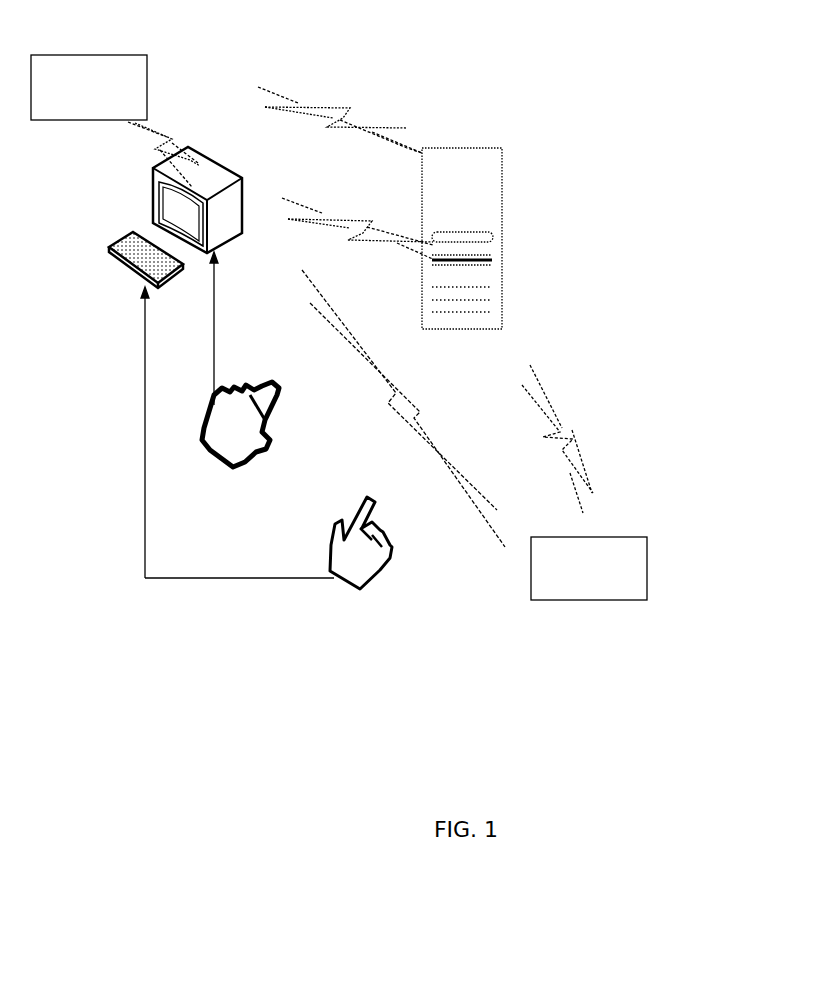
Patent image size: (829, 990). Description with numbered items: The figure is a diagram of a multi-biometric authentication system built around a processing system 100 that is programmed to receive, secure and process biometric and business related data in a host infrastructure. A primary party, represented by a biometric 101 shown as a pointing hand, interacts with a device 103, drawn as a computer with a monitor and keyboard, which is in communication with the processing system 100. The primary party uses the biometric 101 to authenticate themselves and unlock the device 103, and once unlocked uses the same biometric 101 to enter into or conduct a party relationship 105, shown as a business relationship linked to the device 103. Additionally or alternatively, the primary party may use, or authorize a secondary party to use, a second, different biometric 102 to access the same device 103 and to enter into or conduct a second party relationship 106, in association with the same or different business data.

The processing system 100 is at (468, 329).
The primary party biometric 101 is at (260, 452).
The second biometric 102 is at (360, 589).
The device 103 is at (217, 245).
The party relationship 105 is at (147, 90).
The second party relationship 106 is at (647, 567).